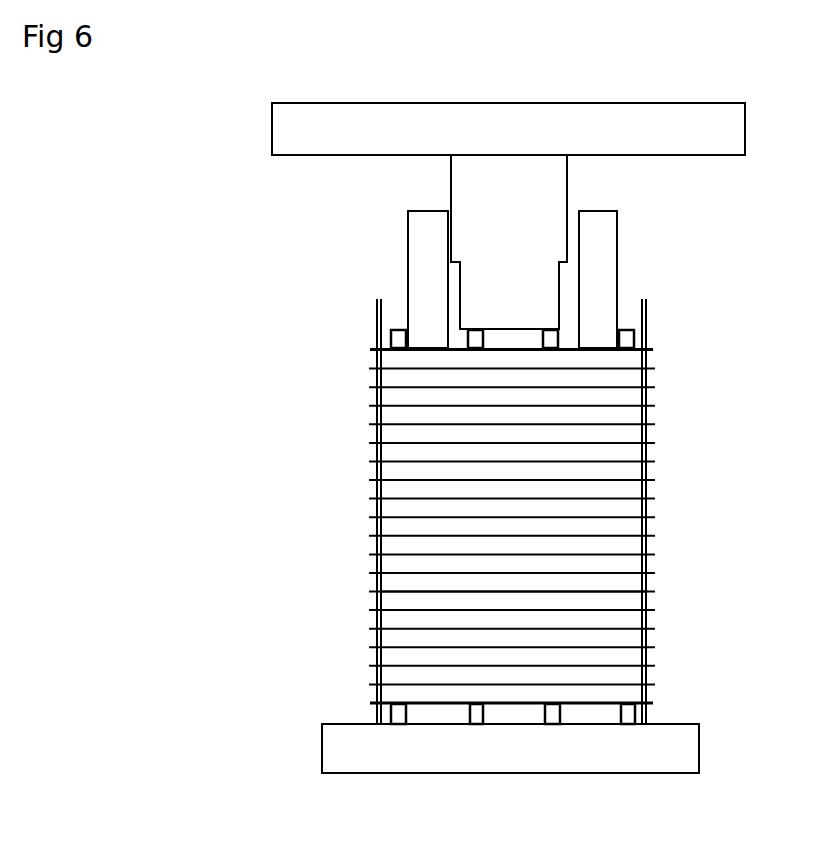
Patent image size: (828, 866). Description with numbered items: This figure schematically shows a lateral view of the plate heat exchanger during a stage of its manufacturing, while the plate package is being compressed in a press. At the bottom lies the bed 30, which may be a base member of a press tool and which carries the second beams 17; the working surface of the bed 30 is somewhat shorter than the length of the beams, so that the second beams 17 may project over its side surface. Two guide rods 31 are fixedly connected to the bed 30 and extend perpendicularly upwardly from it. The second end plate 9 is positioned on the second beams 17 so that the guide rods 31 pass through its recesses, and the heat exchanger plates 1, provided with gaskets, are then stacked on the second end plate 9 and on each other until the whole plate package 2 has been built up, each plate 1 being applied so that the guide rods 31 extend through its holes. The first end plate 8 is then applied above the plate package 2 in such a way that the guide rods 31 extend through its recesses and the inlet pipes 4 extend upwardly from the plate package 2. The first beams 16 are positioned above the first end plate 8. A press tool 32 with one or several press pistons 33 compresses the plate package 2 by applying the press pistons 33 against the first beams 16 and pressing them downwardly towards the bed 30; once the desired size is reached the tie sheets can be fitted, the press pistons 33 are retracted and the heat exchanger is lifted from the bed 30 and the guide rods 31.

The heat exchanger plate 1 is at (457, 591).
The plate package 2 is at (553, 470).
The inlet pipe 4 is at (427, 257).
The first end plate 8 is at (500, 351).
The second end plate 9 is at (440, 703).
The first beam 16 is at (397, 341).
The second beam 17 is at (470, 714).
The bed 30 is at (345, 754).
The guide rod 31 is at (380, 625).
The press tool 32 is at (268, 128).
The press piston 33 is at (520, 300).